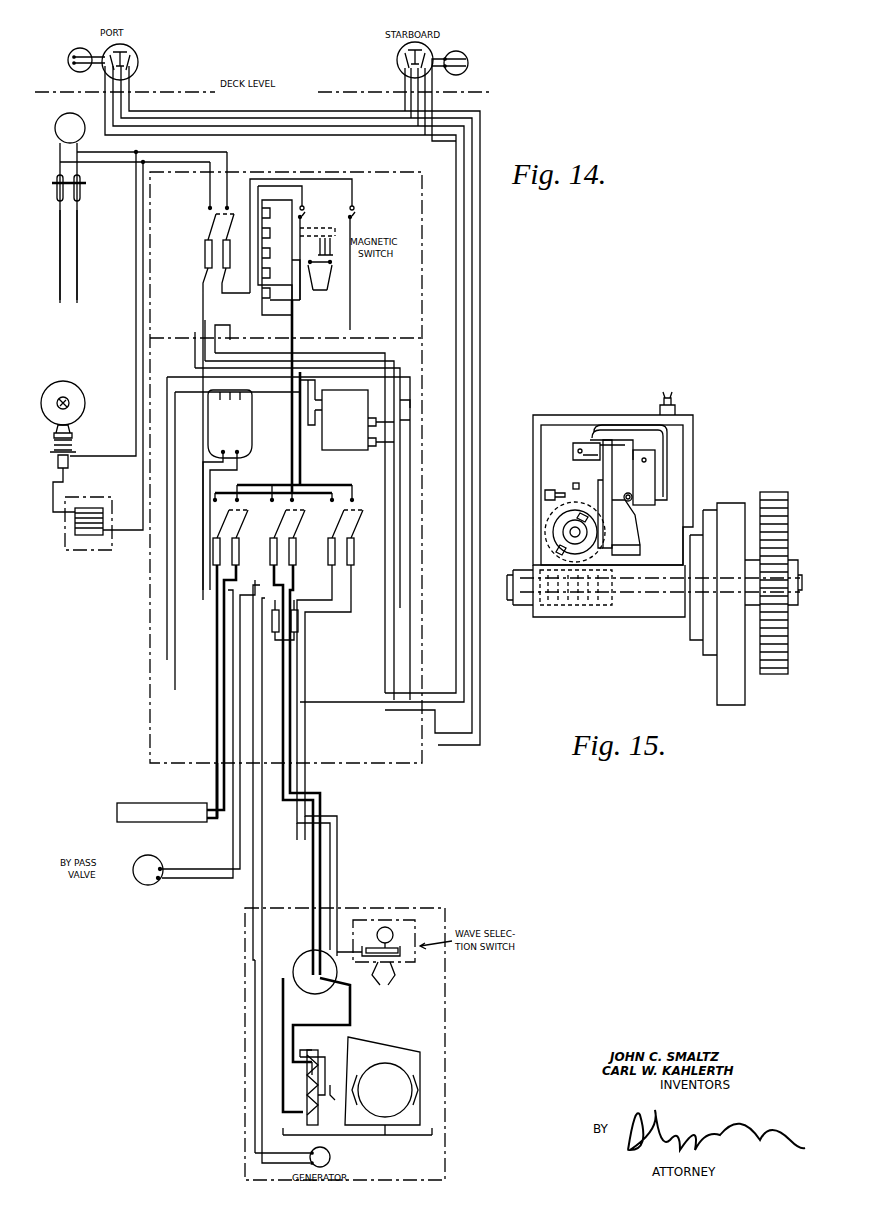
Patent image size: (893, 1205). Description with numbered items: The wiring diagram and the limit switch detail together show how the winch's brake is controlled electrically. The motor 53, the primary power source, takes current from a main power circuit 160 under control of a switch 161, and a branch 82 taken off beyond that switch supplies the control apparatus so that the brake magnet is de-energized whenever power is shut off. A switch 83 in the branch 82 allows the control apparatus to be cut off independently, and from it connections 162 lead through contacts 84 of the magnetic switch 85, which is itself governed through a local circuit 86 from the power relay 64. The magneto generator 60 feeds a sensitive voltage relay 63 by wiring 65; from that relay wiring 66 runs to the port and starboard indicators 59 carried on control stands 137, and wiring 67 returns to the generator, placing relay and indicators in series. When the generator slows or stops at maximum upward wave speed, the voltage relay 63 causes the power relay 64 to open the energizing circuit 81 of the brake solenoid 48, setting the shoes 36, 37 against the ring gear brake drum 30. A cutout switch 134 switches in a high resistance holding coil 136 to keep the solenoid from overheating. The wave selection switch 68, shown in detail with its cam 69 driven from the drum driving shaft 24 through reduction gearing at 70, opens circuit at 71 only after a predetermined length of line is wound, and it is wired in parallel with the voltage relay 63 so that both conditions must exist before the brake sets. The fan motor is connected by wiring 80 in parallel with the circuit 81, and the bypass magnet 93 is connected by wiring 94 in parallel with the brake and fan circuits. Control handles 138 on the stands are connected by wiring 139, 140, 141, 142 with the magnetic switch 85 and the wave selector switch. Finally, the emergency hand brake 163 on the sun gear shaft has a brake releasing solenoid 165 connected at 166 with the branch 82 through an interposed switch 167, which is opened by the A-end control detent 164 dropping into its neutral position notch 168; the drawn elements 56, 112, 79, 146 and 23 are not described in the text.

In FIG. 14, the port cable connector 56 is at (82, 50).
In FIG. 14, the electrical instrument 59 is at (68, 62).
In FIG. 14, the control handle 138 is at (128, 56).
In FIG. 14, the control stand 137 is at (138, 66).
In FIG. 14, the wiring 67 is at (105, 84).
In FIG. 14, the wiring 139 is at (124, 88).
In FIG. 14, the wiring 140 is at (466, 752).
In FIG. 14, the wiring 141 is at (302, 130).
In FIG. 15, the wiring 141 is at (640, 425).
In FIG. 14, the wiring 66 is at (434, 85).
In FIG. 14, the motor 53 is at (58, 120).
In FIG. 14, the branch 82 is at (125, 160).
In FIG. 14, the switch 161 is at (82, 193).
In FIG. 14, the main power circuit 160 is at (70, 255).
In FIG. 14, the connection 166 is at (136, 308).
In FIG. 14, the valve 112 is at (68, 395).
In FIG. 14, the neutral position notch 168 is at (82, 408).
In FIG. 14, the A-end control detent 164 is at (76, 432).
In FIG. 14, the switch 167 is at (72, 466).
In FIG. 14, the brake releasing solenoid 165 is at (75, 532).
In FIG. 14, the emergency hand brake 163 is at (96, 552).
In FIG. 14, the connections 162 is at (250, 182).
In FIG. 14, the switch 83 is at (202, 230).
In FIG. 14, the contacts 84 is at (305, 212).
In FIG. 14, the magnetic switch 85 is at (334, 268).
In FIG. 14, the local circuit 86 is at (350, 352).
In FIG. 14, the voltage relay 63 is at (207, 420).
In FIG. 14, the wiring 65 is at (203, 466).
In FIG. 14, the power relay 64 is at (340, 452).
In FIG. 14, the energizing circuit 81 is at (292, 432).
In FIG. 14, the wiring 94 is at (299, 620).
In FIG. 14, the wiring 80 is at (217, 782).
In FIG. 14, the fan 79 is at (130, 806).
In FIG. 14, the magnet 93 is at (157, 863).
In FIG. 14, the wiring 142 is at (337, 888).
In FIG. 15, the wiring 142 is at (665, 452).
In FIG. 14, the wave selection switch 68 is at (400, 924).
In FIG. 15, the wave selection switch 68 is at (568, 425).
In FIG. 14, the cam 69 is at (378, 930).
In FIG. 15, the cam 69 is at (548, 528).
In FIG. 14, the wave selector switch contacts 71 is at (380, 960).
In FIG. 15, the wave selector switch contacts 71 is at (616, 440).
In FIG. 14, the solenoid 48 is at (300, 1058).
In FIG. 14, the high resistance holding coil 136 is at (303, 1082).
In FIG. 14, the brake shoe 36 is at (420, 1084).
In FIG. 14, the ring gear brake drum 30 is at (385, 1090).
In FIG. 14, the brake shoe 37 is at (385, 1078).
In FIG. 14, the cutout switch 134 is at (332, 1098).
In FIG. 14, the magneto generator 60 is at (331, 1154).
In FIG. 15, the reduction gearing 70 is at (579, 611).
In FIG. 15, the wheel 146 is at (718, 683).
In FIG. 15, the gear 23 is at (775, 492).
In FIG. 15, the drum driving shaft 24 is at (800, 580).